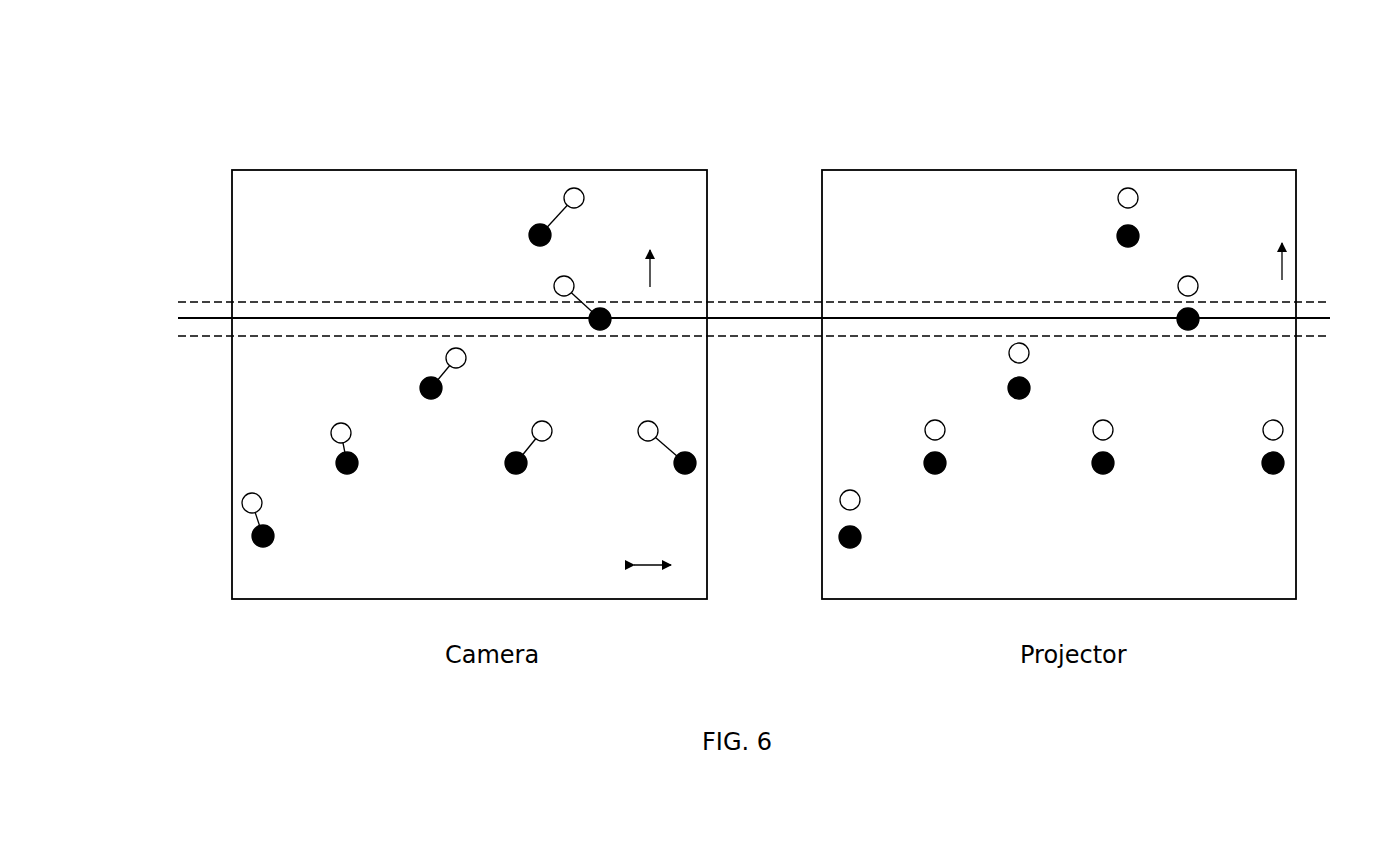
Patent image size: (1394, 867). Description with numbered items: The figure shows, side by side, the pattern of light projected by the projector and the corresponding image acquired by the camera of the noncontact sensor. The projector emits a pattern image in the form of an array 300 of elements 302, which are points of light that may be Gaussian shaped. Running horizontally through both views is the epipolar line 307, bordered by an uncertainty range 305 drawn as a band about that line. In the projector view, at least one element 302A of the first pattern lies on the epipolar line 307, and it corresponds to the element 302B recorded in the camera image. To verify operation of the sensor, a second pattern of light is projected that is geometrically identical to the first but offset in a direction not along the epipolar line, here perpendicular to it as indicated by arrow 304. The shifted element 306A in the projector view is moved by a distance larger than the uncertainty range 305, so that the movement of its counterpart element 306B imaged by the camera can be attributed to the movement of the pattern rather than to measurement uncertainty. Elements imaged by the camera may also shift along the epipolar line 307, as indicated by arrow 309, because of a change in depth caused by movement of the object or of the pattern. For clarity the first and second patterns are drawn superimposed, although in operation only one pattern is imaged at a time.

The array 300 is at (507, 164).
The elements 302 is at (697, 460).
The element 302A is at (1192, 330).
The element 302B is at (600, 330).
The arrow 304 is at (650, 260).
The uncertainty range 305 is at (203, 383).
The second pattern of light element 306A is at (1182, 282).
The element 306B is at (556, 282).
The epipolar line 307 is at (1266, 322).
The arrow 309 is at (657, 562).